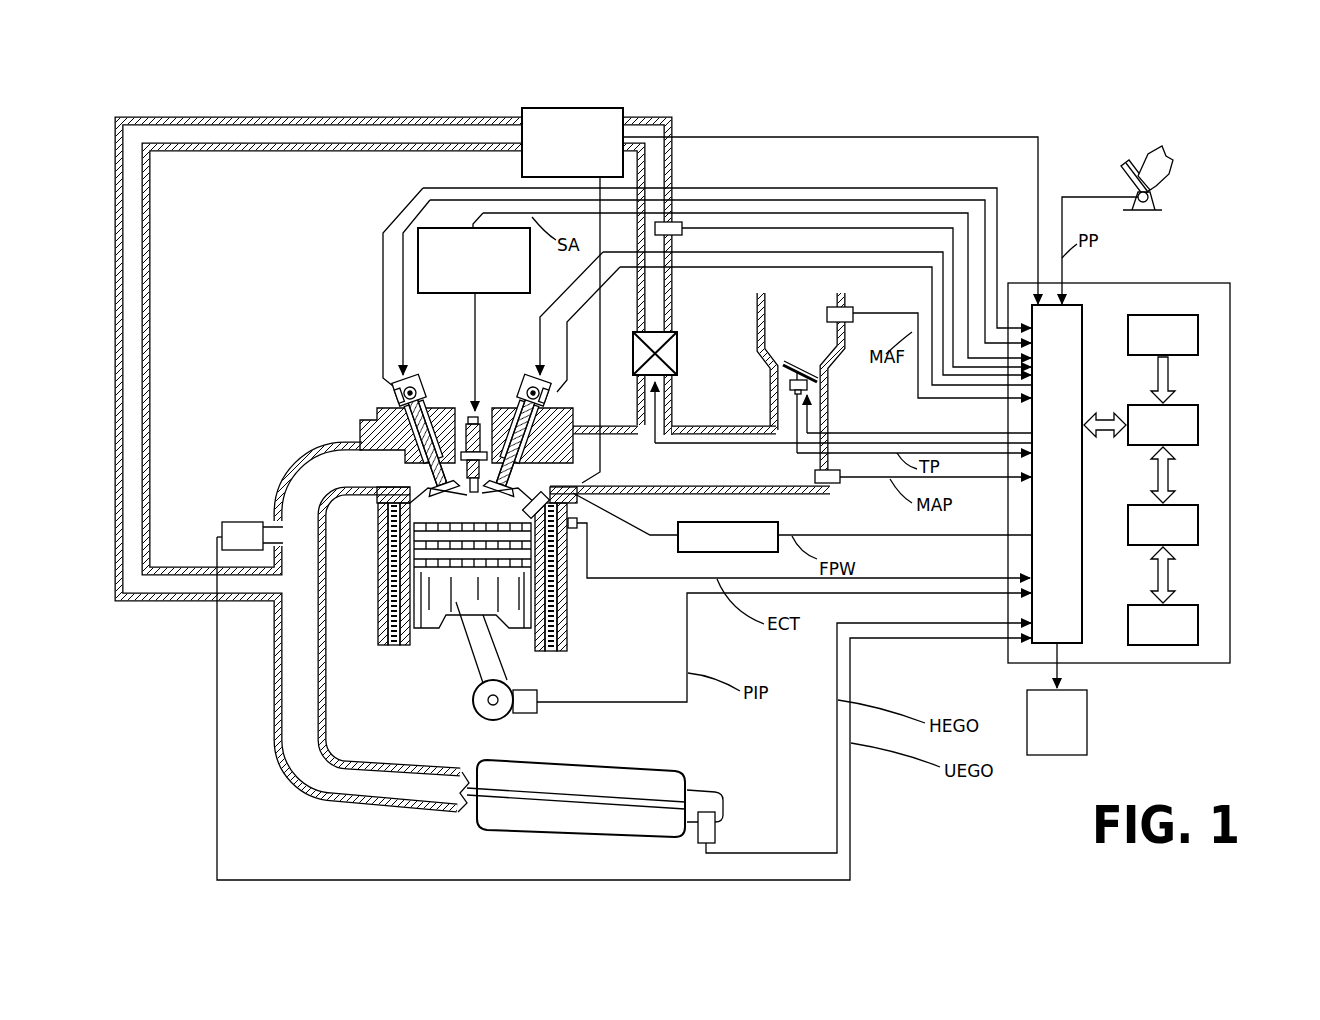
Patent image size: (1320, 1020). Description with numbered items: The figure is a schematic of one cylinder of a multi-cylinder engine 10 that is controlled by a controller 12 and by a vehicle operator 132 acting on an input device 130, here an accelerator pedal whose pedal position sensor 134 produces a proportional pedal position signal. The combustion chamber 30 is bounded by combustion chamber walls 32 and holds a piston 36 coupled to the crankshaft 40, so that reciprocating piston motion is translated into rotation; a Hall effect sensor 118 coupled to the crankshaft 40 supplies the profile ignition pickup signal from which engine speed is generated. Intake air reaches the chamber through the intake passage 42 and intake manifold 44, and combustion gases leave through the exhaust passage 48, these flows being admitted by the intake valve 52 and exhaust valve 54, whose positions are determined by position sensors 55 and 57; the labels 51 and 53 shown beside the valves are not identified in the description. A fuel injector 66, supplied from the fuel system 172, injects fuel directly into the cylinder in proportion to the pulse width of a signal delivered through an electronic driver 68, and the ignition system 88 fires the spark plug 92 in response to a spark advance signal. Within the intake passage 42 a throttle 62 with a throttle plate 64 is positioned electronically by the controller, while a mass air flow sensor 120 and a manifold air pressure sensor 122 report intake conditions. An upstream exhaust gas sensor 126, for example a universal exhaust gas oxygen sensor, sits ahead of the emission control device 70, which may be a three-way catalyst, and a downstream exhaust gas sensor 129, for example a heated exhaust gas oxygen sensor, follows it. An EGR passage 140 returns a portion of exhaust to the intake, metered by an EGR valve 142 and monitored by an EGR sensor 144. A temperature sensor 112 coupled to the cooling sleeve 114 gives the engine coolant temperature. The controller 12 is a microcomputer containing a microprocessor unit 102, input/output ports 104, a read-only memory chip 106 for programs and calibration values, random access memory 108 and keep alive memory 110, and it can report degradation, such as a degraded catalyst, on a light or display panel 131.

The engine 10 is at (308, 357).
The controller 12 is at (1156, 460).
The combustion chamber 30 is at (470, 505).
The combustion chamber walls 32 is at (417, 642).
The piston 36 is at (457, 602).
The crankshaft 40 is at (482, 717).
The intake passage 42 is at (801, 381).
The intake manifold 44 is at (690, 460).
The exhaust passage 48 is at (373, 629).
The intake valve actuator 51 is at (525, 378).
The intake valve 52 is at (515, 472).
The exhaust valve actuator 53 is at (420, 378).
The exhaust valve 54 is at (412, 462).
The position sensor 55 is at (548, 397).
The position sensor 57 is at (396, 390).
The throttle 62 is at (810, 382).
The throttle plate 64 is at (783, 376).
The fuel injector 66 is at (556, 507).
The electronic driver 68 is at (707, 554).
The emission control device 70 is at (645, 769).
The ignition system 88 is at (427, 231).
The spark plug 92 is at (479, 414).
The microprocessor unit 102 is at (1200, 433).
The input/output ports 104 is at (1082, 320).
The read-only memory chip 106 is at (1200, 335).
The random access memory 108 is at (1200, 525).
The keep alive memory 110 is at (1200, 625).
The temperature sensor 112 is at (585, 537).
The cooling sleeve 114 is at (552, 605).
The Hall effect sensor 118 is at (528, 714).
The mass air flow sensor 120 is at (842, 306).
The manifold air pressure sensor 122 is at (828, 486).
The upstream exhaust gas sensor 126 is at (222, 529).
The downstream exhaust gas sensor 129 is at (716, 836).
The input device 130 is at (1127, 165).
The light or display panel 131 is at (1057, 699).
The vehicle operator 132 is at (1172, 157).
The pedal position sensor 134 is at (1155, 198).
The EGR passage 140 is at (377, 116).
The EGR valve 142 is at (707, 339).
The EGR sensor 144 is at (668, 236).
The fuel system 172 is at (579, 108).